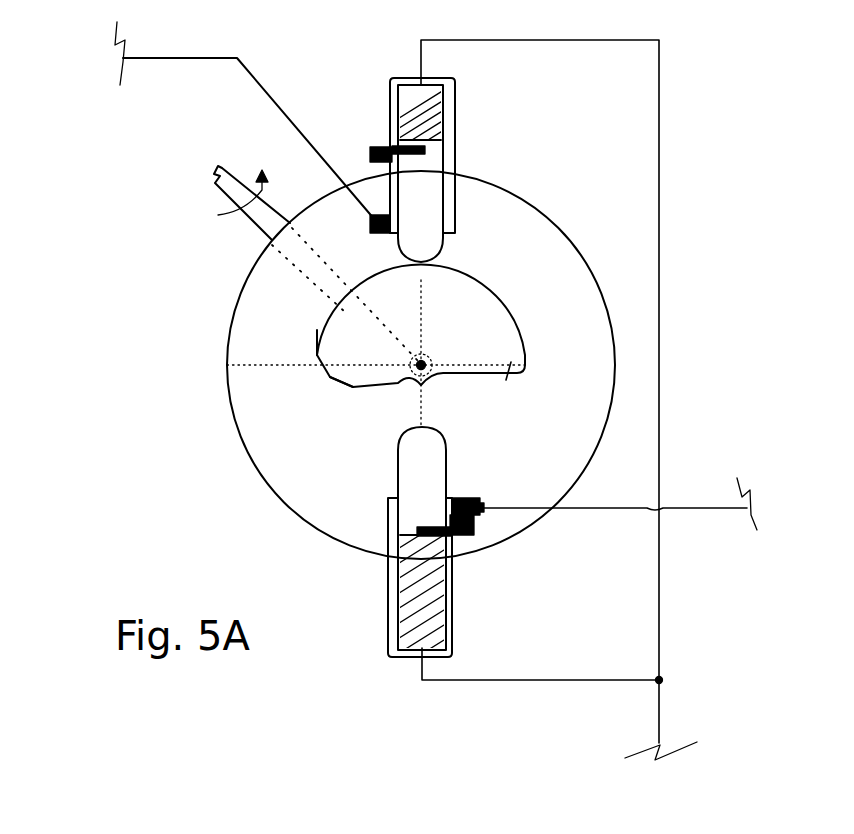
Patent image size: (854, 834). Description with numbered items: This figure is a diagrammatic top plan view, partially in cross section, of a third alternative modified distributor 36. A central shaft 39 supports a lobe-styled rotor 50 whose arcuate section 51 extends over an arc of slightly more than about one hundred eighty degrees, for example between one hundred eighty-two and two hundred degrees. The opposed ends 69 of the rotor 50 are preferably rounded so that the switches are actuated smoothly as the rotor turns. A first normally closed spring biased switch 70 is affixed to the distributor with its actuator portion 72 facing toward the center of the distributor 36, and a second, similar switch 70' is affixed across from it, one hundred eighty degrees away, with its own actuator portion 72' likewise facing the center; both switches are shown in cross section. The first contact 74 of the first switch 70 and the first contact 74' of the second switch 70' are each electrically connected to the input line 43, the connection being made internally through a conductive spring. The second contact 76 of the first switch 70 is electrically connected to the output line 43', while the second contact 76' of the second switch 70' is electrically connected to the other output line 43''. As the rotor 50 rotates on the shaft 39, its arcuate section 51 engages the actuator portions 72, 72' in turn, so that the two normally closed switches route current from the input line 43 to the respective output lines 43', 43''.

The modified distributor 36 is at (128, 478).
The central shaft 39 is at (233, 178).
The input line 43 is at (573, 400).
The output line 43' is at (245, 118).
The output line 43'' is at (621, 481).
The lobe-styled rotor 50 is at (477, 309).
The arcuate section 51 is at (316, 336).
The opposed ends 69 is at (336, 388).
The first normally closed spring biased switch 70 is at (444, 155).
The second switch 70' is at (445, 596).
The actuator portion 72 is at (461, 173).
The actuator portion 72' is at (450, 538).
The first contact 74 is at (376, 129).
The first contact 74' is at (485, 540).
The second contact 76 is at (353, 231).
The second contact 76' is at (496, 497).